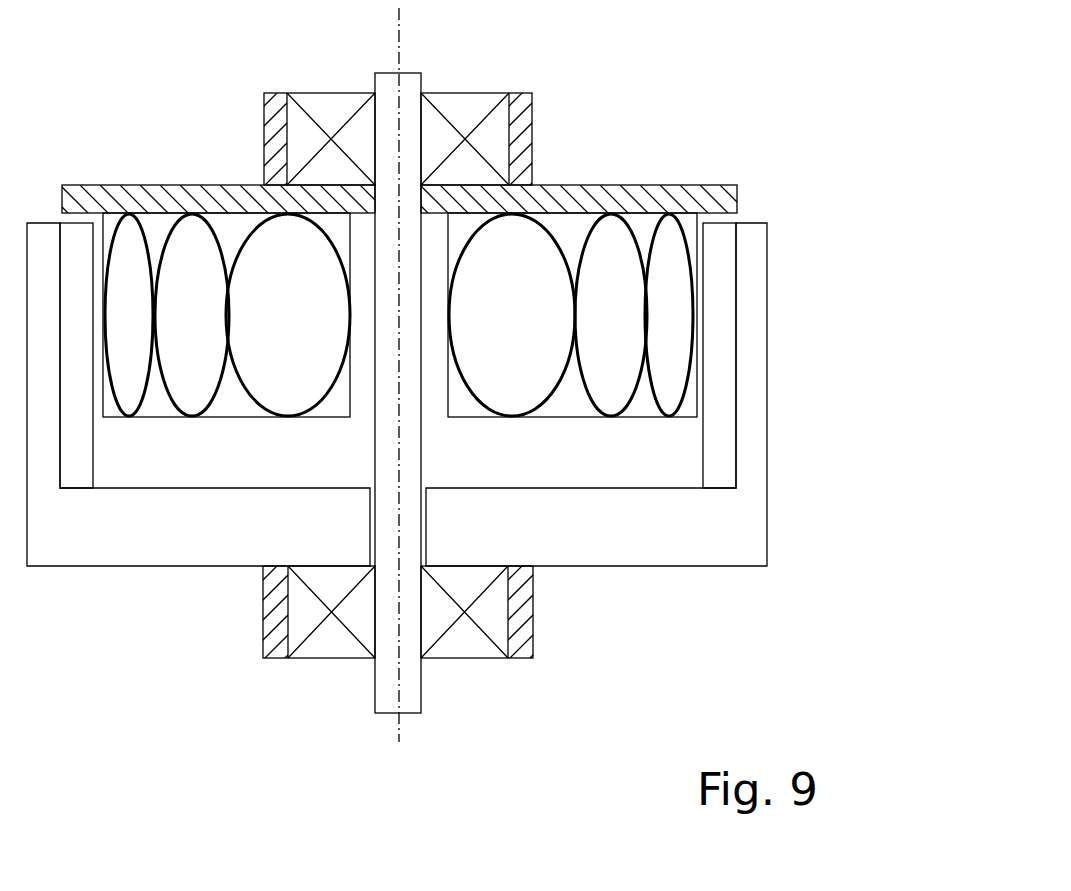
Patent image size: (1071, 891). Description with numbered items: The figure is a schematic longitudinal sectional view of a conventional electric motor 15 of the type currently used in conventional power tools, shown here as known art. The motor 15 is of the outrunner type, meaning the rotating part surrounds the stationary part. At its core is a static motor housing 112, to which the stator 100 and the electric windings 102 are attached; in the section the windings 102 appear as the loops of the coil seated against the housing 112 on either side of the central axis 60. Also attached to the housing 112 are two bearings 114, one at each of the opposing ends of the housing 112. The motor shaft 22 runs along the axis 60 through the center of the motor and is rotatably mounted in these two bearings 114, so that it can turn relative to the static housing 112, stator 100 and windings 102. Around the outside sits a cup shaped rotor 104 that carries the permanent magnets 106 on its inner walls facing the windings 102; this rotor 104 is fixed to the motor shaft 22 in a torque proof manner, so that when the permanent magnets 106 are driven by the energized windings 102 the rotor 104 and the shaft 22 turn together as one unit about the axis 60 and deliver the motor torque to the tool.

The electric motor 15 is at (722, 145).
The motor shaft 22 is at (412, 702).
The rotation axis 60 is at (396, 22).
The stator 100 is at (630, 420).
The electric windings 102 is at (191, 243).
The cup shaped rotor 104 is at (178, 568).
The permanent magnets 106 is at (81, 243).
The motor housing 112 is at (660, 195).
The bearings 114 is at (468, 105).